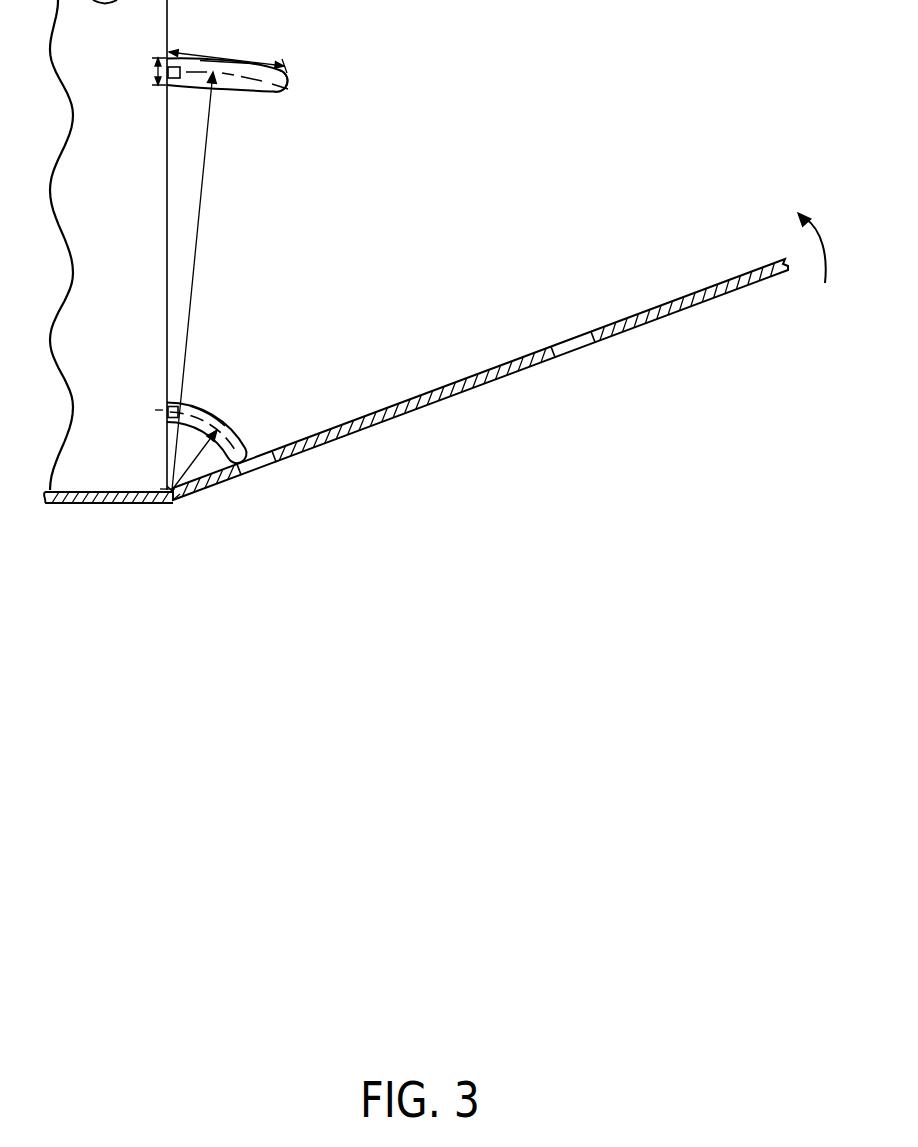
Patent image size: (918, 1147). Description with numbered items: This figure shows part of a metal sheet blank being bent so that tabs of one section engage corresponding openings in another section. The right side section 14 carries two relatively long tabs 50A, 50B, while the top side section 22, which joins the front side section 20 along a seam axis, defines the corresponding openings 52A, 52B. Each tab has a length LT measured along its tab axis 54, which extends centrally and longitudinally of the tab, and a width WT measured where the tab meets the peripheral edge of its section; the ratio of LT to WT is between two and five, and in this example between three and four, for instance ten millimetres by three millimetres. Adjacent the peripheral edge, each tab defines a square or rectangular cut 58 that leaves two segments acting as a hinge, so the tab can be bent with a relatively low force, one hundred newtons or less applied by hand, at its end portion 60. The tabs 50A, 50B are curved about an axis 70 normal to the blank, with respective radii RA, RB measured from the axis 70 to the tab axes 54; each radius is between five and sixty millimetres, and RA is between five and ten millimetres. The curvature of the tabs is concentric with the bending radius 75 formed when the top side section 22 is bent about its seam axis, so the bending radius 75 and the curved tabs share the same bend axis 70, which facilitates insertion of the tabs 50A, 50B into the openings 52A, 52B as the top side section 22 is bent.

The right side section 14 is at (129, 271).
The front side section 20 is at (102, 503).
The top side section 22 is at (447, 398).
The tab 50A is at (250, 444).
The tab 50B is at (282, 78).
The opening 52A is at (267, 470).
The opening 52B is at (572, 352).
The axis of the tab 54 is at (240, 78).
The cut 58 is at (182, 85).
The end portion 60 is at (270, 96).
The axis 70 is at (168, 504).
The bending radius 75 is at (174, 503).
The length of the tab LT is at (208, 51).
The width of the tab WT is at (157, 72).
The radius of tab 50A RA is at (185, 471).
The radius of tab 50B RB is at (200, 225).